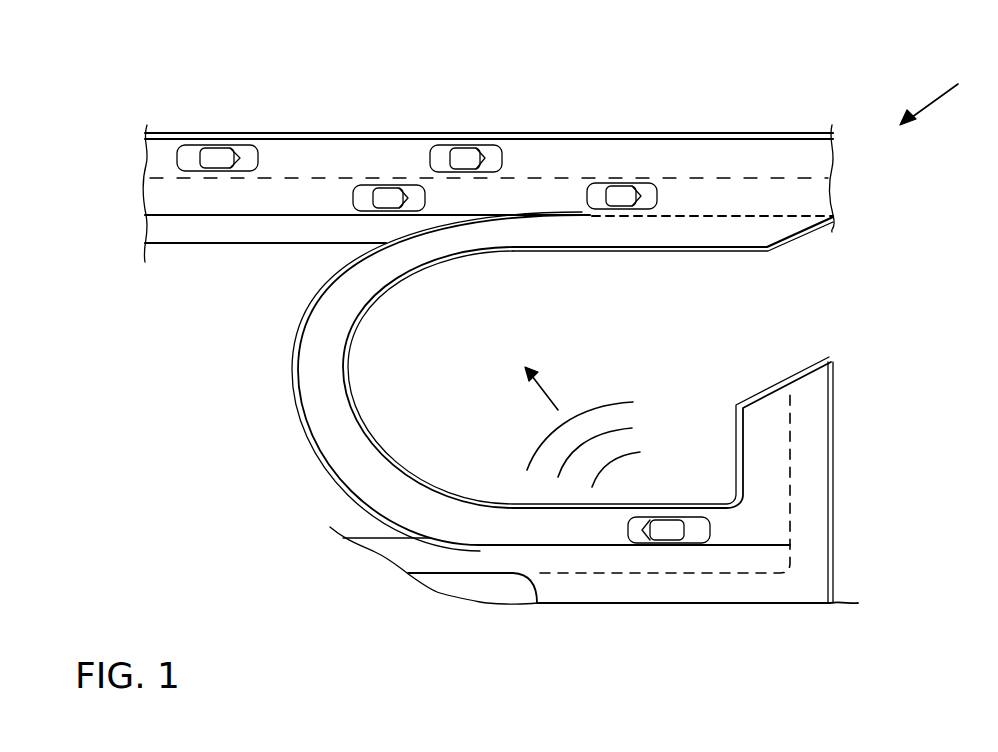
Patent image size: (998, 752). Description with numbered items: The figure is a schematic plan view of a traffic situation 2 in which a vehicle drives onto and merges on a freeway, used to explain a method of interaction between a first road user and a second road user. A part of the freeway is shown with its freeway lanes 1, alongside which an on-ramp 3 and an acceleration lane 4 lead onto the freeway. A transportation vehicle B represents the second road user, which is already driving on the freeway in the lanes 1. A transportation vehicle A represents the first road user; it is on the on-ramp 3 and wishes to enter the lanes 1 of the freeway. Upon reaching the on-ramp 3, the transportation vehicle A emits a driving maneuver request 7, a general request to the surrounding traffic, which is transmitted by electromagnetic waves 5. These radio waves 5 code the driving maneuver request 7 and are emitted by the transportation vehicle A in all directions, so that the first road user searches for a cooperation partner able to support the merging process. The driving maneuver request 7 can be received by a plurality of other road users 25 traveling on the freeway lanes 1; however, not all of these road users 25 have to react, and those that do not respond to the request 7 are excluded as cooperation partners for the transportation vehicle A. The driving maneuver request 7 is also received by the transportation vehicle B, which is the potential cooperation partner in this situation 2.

The freeway lane 1 is at (310, 206).
The situation 2 is at (935, 93).
The on-ramp 3 is at (318, 372).
The acceleration lane 4 is at (667, 230).
The electromagnetic waves 5 is at (618, 458).
The driving maneuver request 7 is at (545, 393).
The road users 25 is at (612, 193).
The first road user A is at (675, 530).
The second road user B is at (212, 158).